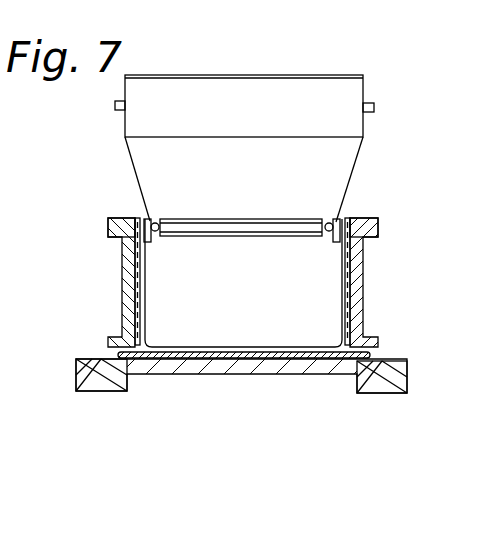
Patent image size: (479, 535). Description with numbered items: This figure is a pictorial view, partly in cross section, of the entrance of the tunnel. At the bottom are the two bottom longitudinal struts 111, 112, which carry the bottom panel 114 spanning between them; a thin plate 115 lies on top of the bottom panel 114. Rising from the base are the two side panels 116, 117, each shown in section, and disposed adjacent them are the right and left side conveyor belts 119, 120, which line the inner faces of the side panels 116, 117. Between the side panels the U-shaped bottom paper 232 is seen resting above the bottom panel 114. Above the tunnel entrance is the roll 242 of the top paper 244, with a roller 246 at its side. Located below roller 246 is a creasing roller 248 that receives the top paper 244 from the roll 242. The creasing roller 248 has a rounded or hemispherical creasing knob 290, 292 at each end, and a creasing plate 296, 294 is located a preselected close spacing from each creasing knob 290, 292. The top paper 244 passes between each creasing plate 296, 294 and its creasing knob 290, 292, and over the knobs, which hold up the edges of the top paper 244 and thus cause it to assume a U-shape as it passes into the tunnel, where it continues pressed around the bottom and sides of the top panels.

The roll 242 is at (260, 75).
The roller 246 is at (380, 97).
The top paper 244 is at (322, 150).
The creasing roller 248 is at (238, 234).
The creasing knob 290 is at (153, 231).
The creasing knob 292 is at (330, 232).
The creasing plate 296 is at (132, 217).
The creasing plate 294 is at (362, 218).
The side panel 116 is at (122, 282).
The side conveyor belt 119 is at (137, 305).
The side panel 117 is at (362, 285).
The side conveyor belt 120 is at (350, 305).
The U-shaped bottom paper 232 is at (147, 347).
The bottom plate 115 is at (283, 358).
The bottom panel 114 is at (205, 375).
The bottom longitudinal strut 111 is at (76, 372).
The bottom longitudinal strut 112 is at (407, 378).